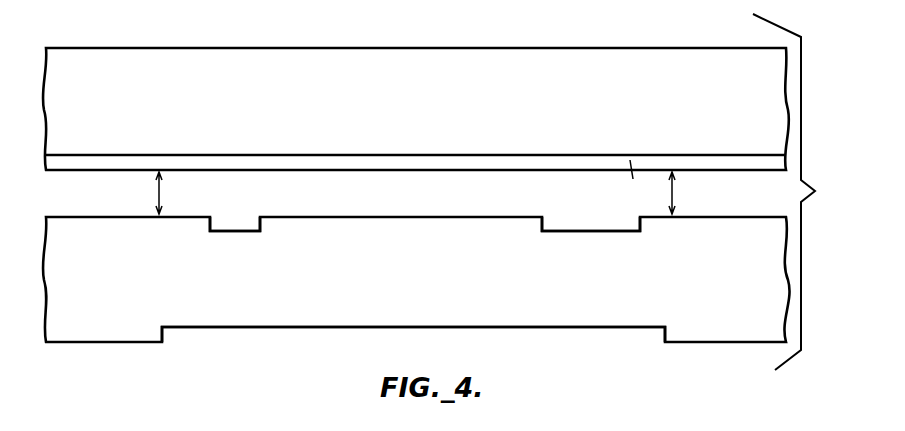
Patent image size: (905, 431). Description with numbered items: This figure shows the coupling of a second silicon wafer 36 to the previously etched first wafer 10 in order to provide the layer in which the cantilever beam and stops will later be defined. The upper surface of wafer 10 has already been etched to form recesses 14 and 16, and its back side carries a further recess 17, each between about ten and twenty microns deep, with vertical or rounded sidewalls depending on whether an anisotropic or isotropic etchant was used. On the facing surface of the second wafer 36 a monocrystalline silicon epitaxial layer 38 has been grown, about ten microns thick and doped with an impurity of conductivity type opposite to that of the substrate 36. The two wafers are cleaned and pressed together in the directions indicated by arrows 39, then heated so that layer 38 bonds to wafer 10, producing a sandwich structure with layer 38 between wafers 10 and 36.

The second silicon wafer 36 is at (740, 123).
The wafer 10 is at (742, 293).
The recess 14 is at (238, 211).
The recess 16 is at (581, 218).
The recess 17 is at (542, 336).
The monocrystalline silicon epitaxial layer 38 is at (737, 160).
The arrows 39 is at (161, 193).
The N-type region N is at (640, 179).